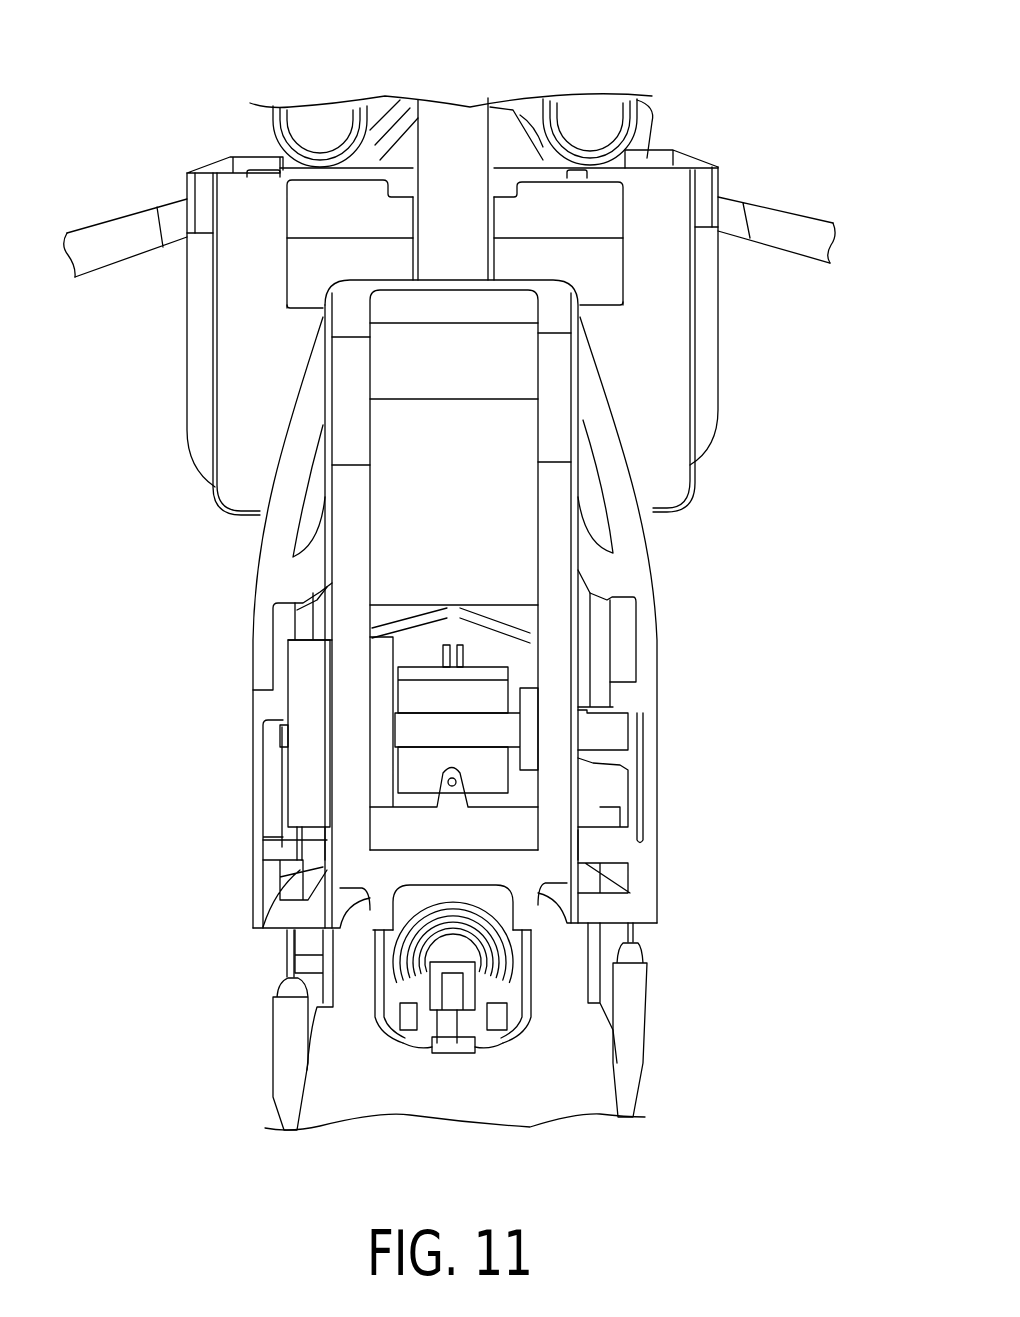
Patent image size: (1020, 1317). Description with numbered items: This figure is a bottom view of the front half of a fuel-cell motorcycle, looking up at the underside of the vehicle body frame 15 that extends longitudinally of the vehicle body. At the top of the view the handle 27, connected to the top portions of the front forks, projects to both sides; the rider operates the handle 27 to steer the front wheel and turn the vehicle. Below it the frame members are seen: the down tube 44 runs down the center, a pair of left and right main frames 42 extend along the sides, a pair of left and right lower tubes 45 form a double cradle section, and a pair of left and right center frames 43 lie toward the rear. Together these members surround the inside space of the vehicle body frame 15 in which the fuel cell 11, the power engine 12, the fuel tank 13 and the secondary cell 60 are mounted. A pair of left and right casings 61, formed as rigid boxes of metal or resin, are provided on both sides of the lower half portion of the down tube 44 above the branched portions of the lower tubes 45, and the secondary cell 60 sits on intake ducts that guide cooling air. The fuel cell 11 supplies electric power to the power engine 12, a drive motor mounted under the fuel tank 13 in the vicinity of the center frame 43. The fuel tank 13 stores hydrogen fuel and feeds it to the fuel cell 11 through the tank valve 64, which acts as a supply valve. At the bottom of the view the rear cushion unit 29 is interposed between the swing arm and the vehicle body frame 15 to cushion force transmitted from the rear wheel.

The vehicle body frame 15 is at (471, 99).
The casing 61 is at (317, 210).
The handle 27 is at (777, 208).
The down tube 44 is at (460, 212).
The secondary cell 60 is at (245, 318).
The lower tube 45 is at (350, 343).
The fuel cell 11 is at (407, 442).
The main frame 42 is at (253, 527).
The fuel tank 13 is at (490, 643).
The power engine 12 is at (284, 742).
The tank valve 64 is at (477, 777).
The center frame 43 is at (350, 850).
The rear cushion unit 29 is at (457, 955).